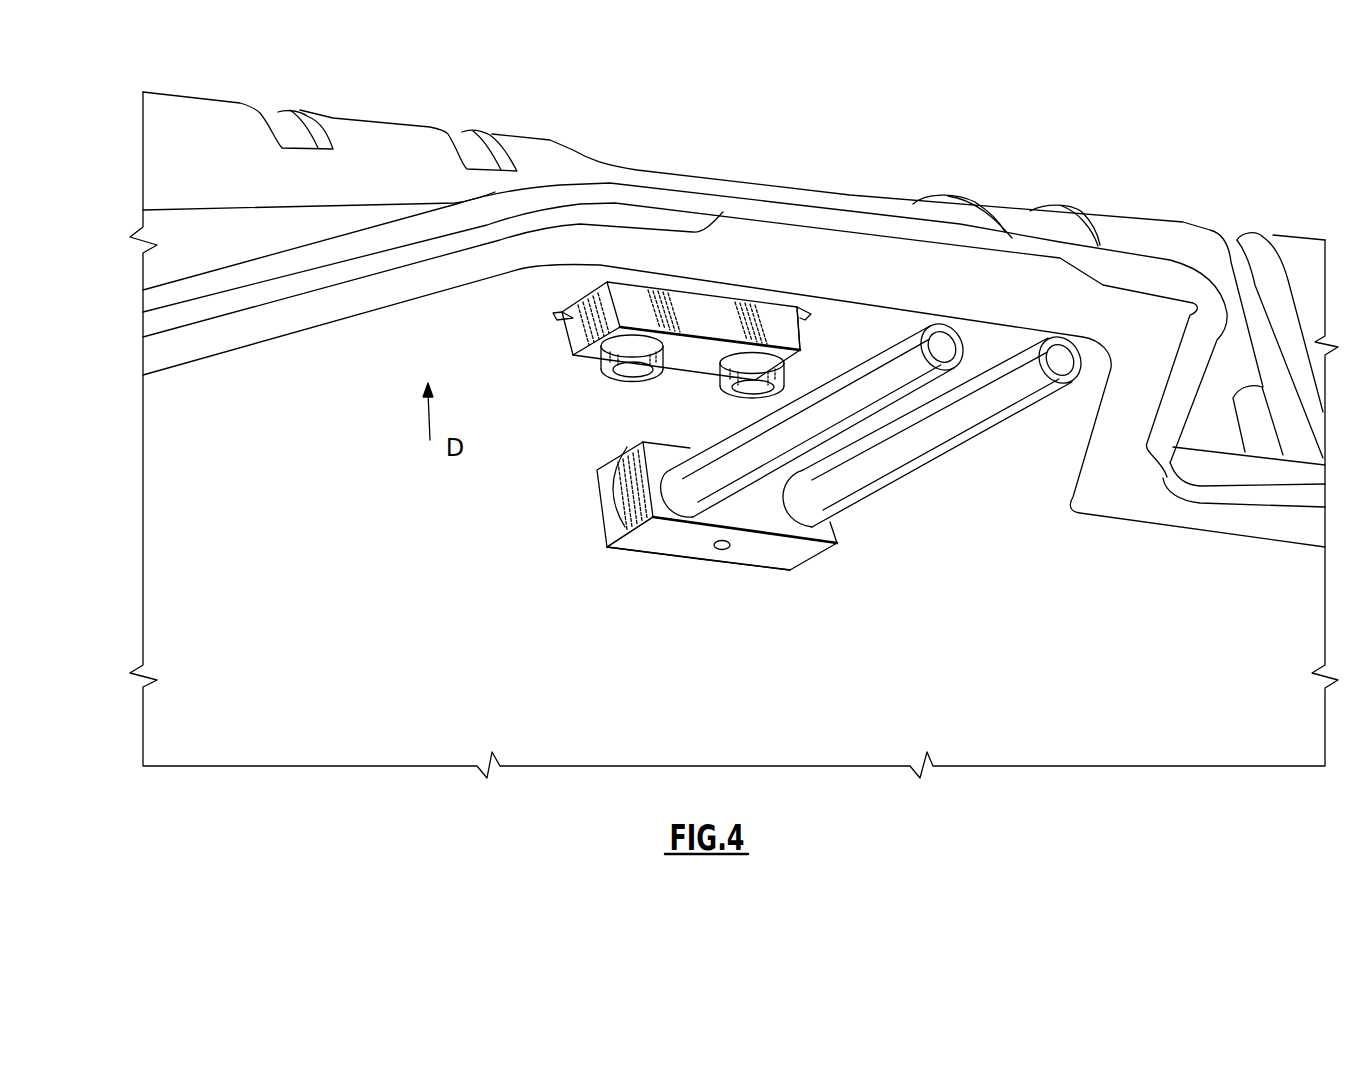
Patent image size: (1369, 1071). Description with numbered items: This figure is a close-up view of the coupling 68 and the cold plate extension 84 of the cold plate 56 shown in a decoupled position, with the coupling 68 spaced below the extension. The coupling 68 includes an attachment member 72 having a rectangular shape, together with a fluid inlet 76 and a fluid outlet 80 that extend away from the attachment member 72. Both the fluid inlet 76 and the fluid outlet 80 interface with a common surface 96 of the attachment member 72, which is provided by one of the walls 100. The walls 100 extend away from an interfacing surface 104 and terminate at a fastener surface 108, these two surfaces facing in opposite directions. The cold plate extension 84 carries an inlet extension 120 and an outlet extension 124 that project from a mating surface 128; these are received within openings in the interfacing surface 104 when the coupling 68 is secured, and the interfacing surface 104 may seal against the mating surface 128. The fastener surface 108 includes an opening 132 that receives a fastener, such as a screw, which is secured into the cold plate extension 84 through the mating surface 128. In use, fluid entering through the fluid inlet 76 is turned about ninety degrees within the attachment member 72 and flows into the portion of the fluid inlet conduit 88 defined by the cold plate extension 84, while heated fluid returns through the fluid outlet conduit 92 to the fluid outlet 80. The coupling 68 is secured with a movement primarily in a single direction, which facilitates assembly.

The cold plate 56 is at (905, 167).
The coupling 68 is at (813, 515).
The attachment member 72 is at (657, 542).
The fluid inlet 76 is at (943, 433).
The fluid outlet 80 is at (792, 430).
The cold plate extension 84 is at (695, 325).
The fluid inlet conduit 88 is at (744, 390).
The fluid outlet conduit 92 is at (629, 374).
The common surface 96 is at (773, 553).
The walls 100 is at (628, 550).
The interfacing surface 104 is at (605, 517).
The fastener surface 108 is at (673, 546).
The inlet extension 120 is at (768, 365).
The outlet extension 124 is at (602, 366).
The mating surface 128 is at (698, 357).
The opening 132 is at (726, 546).